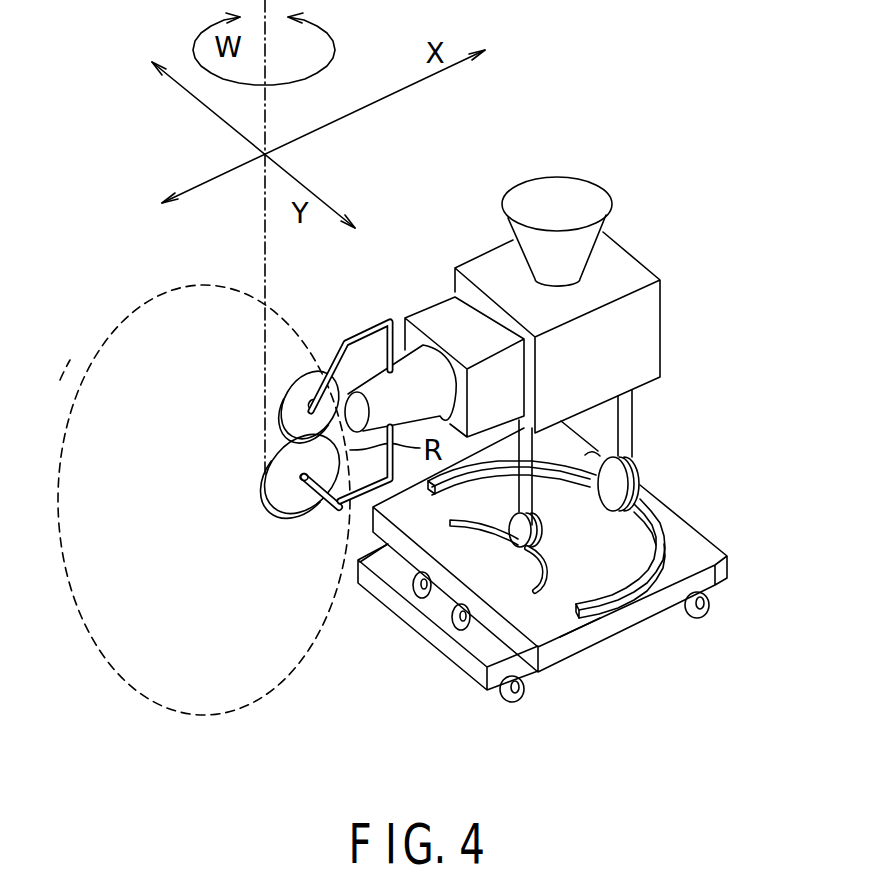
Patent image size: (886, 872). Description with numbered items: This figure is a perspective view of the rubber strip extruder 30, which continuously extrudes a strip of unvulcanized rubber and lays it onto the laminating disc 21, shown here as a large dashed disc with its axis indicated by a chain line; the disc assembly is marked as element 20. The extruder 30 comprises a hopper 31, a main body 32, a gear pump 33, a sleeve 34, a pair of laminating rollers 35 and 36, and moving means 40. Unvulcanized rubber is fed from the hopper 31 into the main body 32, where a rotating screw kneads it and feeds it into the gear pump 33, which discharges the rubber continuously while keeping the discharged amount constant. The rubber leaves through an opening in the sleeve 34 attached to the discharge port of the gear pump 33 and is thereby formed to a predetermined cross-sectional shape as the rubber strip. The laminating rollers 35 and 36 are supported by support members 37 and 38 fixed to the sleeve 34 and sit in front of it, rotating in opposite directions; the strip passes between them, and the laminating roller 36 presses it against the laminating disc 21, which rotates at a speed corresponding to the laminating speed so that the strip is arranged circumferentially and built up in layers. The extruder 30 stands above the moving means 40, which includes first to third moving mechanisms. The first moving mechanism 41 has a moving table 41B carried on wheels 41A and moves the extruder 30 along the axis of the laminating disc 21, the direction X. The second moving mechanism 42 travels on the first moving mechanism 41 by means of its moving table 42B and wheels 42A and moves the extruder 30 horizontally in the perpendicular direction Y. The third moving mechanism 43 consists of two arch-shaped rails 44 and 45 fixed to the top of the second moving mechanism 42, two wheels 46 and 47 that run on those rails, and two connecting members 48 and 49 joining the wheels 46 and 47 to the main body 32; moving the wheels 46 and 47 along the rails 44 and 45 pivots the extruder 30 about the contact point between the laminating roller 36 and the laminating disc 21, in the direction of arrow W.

The workpiece (rotating body) 20 is at (139, 291).
The laminating disc 21 is at (125, 372).
The extruder 30 is at (685, 301).
The hopper 31 is at (568, 185).
The main body 32 is at (488, 263).
The gear pump 33 is at (447, 316).
The sleeve 34 is at (423, 373).
The laminating roller 35 is at (288, 400).
The laminating roller 36 is at (283, 507).
The support member 37 is at (357, 335).
The support member 38 is at (325, 507).
The moving means 40 is at (718, 525).
The first moving mechanism 41 is at (455, 685).
The wheels 41A is at (520, 697).
The moving table 41B is at (452, 657).
The second moving mechanism 42 is at (635, 610).
The wheels 42A is at (410, 600).
The moving table 42B is at (588, 638).
The third moving mechanism 43 is at (647, 477).
The rail 44 is at (537, 572).
The rail 45 is at (630, 555).
The wheel 46 is at (520, 533).
The wheel 47 is at (613, 492).
The connecting member 48 is at (523, 493).
The connecting member 49 is at (638, 408).